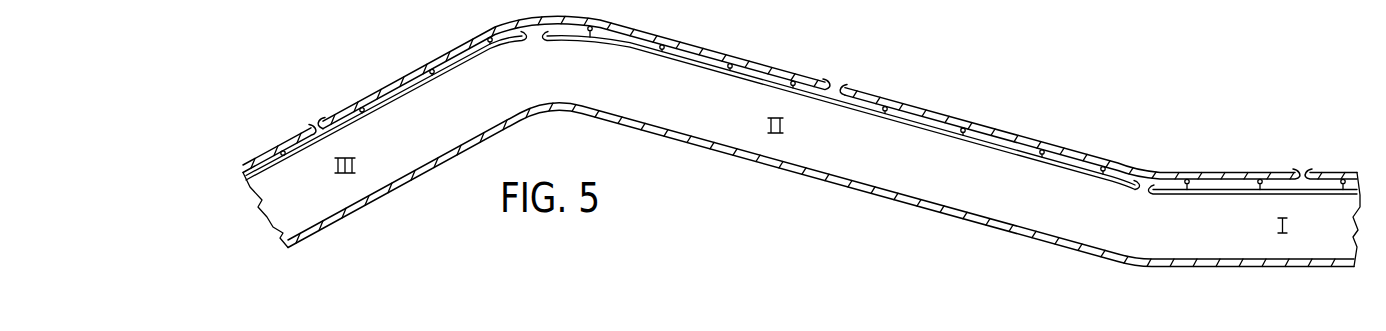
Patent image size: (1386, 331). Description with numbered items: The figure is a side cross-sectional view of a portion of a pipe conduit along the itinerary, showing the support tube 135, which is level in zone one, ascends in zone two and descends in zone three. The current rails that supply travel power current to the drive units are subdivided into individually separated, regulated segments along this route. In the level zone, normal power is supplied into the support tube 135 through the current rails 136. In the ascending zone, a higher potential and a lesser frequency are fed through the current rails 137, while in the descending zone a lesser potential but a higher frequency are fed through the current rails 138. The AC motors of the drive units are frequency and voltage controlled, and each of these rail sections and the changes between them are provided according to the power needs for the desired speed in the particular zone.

The support tube 135 is at (860, 187).
The current rails 136 is at (1298, 192).
The current rails 137 is at (837, 102).
The current rails 138 is at (328, 135).